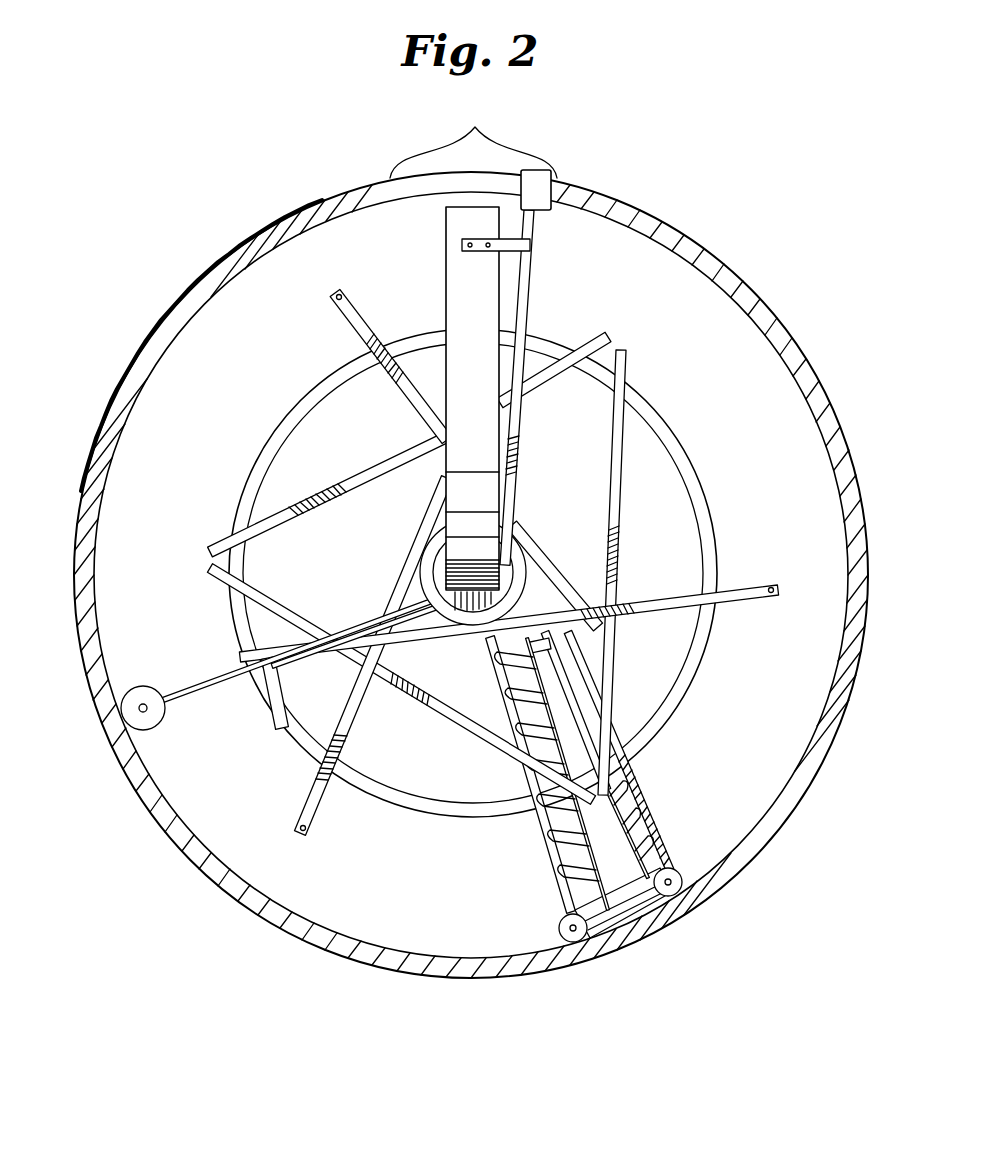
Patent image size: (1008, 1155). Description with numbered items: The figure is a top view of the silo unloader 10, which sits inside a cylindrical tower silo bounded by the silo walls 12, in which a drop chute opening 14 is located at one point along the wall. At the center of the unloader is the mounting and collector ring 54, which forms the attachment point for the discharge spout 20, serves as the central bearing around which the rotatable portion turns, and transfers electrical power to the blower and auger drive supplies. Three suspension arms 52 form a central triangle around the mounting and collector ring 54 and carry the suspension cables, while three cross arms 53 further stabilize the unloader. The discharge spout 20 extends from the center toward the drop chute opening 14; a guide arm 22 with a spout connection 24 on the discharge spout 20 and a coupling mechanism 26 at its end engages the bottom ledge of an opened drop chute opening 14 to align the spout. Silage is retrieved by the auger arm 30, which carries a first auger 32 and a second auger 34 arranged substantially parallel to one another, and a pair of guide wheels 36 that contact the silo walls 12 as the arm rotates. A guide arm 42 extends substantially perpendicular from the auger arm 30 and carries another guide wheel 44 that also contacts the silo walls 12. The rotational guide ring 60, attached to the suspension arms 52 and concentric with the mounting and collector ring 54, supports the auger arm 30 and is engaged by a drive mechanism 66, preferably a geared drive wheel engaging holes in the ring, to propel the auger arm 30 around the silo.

The silo unloader 10 is at (668, 393).
The silo walls 12 is at (690, 240).
The drop chute opening 14 is at (473, 138).
The discharge spout 20 is at (447, 285).
The guide arm 22 is at (528, 300).
The spout connection 24 is at (530, 247).
The coupling mechanism 26 is at (545, 192).
The auger arm 30 is at (657, 797).
The first auger 32 is at (683, 879).
The second auger 34 is at (552, 866).
The guide wheels 36 is at (585, 942).
The guide arm 42 is at (214, 682).
The guide wheel 44 is at (121, 708).
The suspension arms 52 is at (400, 388).
The cross arms 53 is at (298, 506).
The mounting and collector ring 54 is at (566, 461).
The rotational guide ring 60 is at (690, 472).
The drive mechanism 66 is at (266, 748).